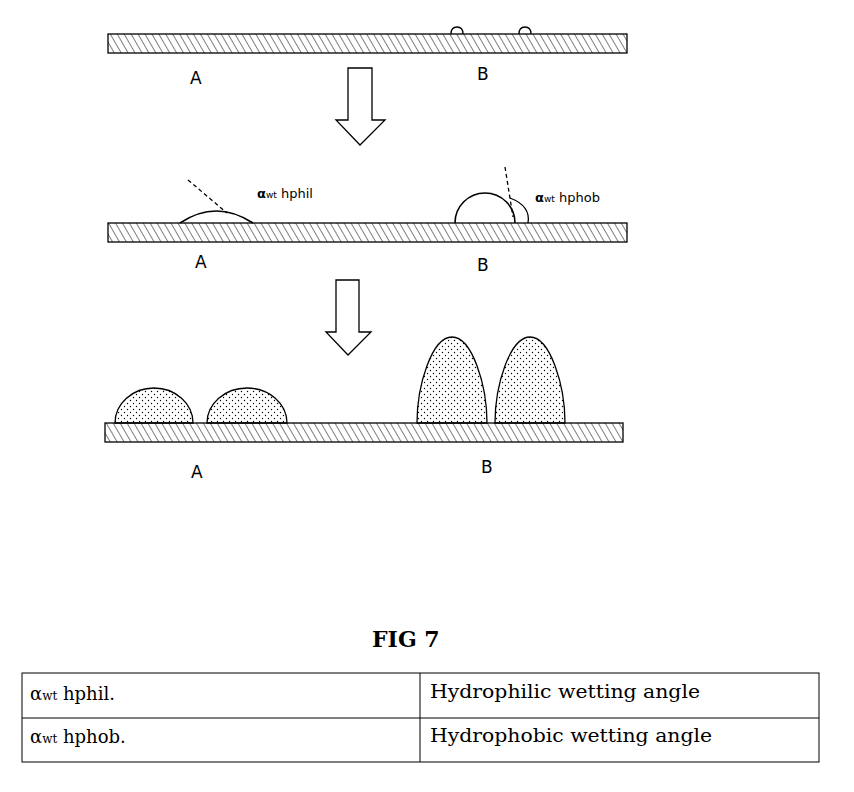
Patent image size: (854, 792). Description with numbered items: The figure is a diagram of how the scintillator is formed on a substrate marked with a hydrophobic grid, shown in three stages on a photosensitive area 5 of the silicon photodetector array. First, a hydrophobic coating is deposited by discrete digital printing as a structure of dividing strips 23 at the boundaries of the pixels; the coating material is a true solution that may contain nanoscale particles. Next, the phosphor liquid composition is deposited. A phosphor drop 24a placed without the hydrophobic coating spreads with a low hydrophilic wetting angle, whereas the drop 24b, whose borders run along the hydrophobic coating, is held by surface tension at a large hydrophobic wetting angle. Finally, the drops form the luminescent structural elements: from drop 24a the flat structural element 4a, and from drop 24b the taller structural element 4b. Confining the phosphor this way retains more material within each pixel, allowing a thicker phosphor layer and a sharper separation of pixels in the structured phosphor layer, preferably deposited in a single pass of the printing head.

The photosensitive area 5 is at (607, 423).
The dividing strips 23 is at (462, 35).
The phosphor drop 24a is at (192, 212).
The drop 24b is at (482, 212).
The structural element 4a is at (258, 405).
The structural element 4b is at (452, 353).